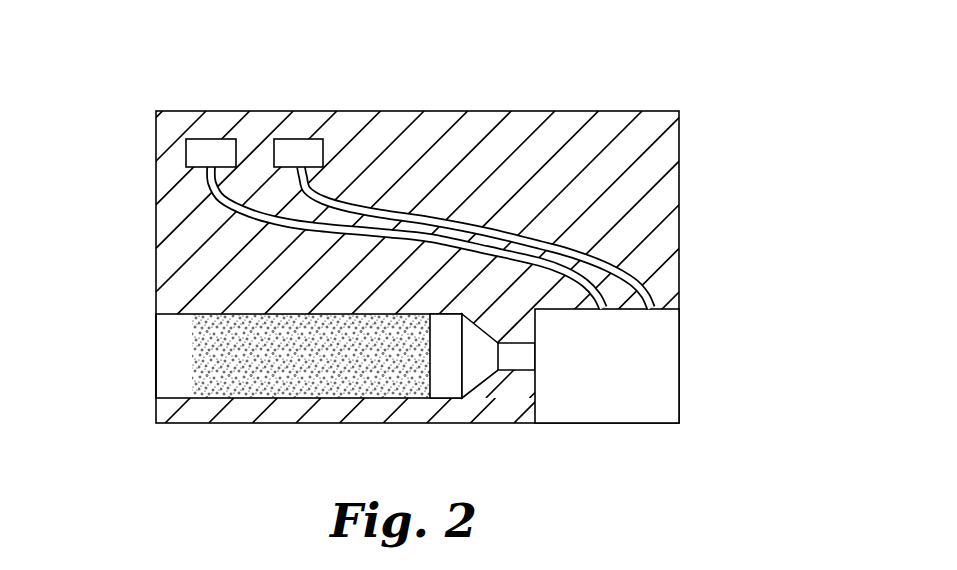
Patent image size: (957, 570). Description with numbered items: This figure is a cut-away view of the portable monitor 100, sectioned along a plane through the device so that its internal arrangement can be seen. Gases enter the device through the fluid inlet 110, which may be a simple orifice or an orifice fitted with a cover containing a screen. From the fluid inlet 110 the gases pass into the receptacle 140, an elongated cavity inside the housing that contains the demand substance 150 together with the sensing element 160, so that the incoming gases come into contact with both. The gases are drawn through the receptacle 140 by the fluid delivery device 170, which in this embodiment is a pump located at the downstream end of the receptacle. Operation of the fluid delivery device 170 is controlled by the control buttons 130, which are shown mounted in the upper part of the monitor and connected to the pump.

The portable monitor 100 is at (675, 63).
The fluid inlet 110 is at (146, 337).
The control buttons 130 is at (278, 140).
The receptacle 140 is at (167, 385).
The demand substance 150 is at (303, 387).
The sensing element 160 is at (443, 387).
The fluid delivery device 170 is at (663, 358).